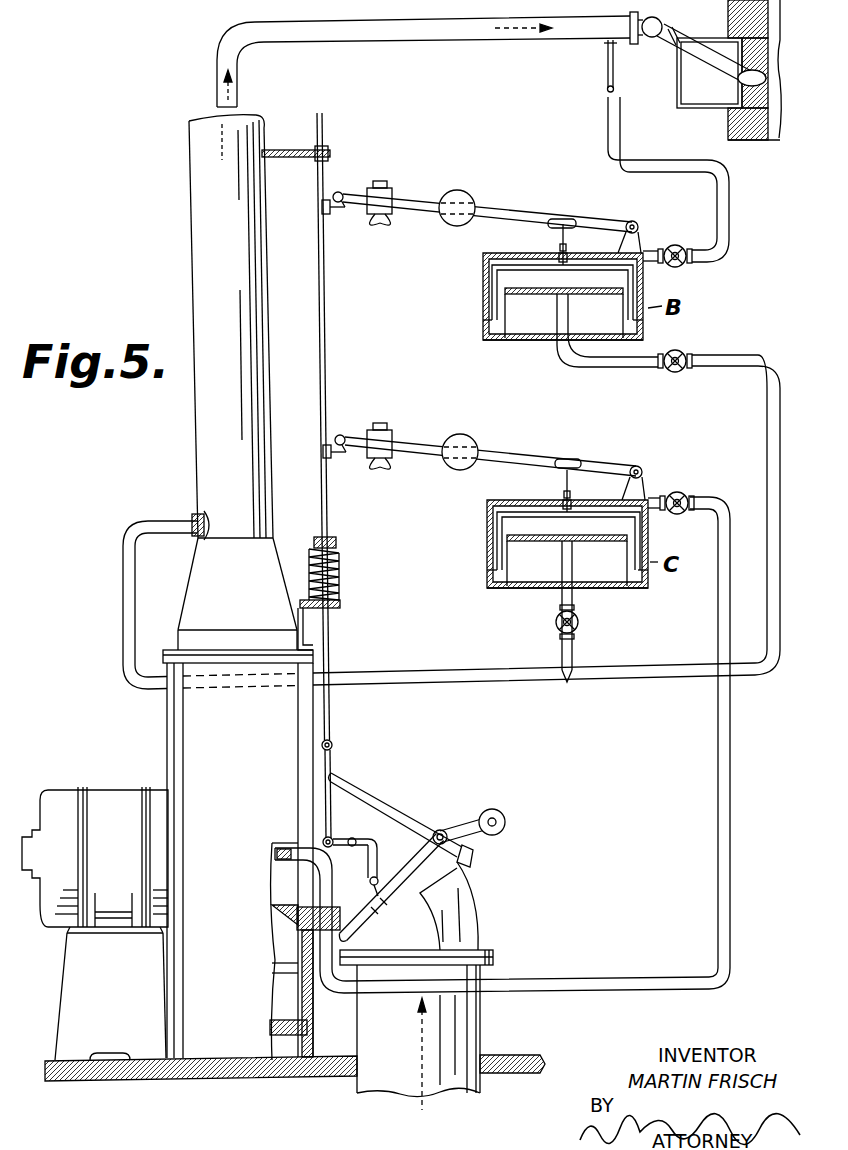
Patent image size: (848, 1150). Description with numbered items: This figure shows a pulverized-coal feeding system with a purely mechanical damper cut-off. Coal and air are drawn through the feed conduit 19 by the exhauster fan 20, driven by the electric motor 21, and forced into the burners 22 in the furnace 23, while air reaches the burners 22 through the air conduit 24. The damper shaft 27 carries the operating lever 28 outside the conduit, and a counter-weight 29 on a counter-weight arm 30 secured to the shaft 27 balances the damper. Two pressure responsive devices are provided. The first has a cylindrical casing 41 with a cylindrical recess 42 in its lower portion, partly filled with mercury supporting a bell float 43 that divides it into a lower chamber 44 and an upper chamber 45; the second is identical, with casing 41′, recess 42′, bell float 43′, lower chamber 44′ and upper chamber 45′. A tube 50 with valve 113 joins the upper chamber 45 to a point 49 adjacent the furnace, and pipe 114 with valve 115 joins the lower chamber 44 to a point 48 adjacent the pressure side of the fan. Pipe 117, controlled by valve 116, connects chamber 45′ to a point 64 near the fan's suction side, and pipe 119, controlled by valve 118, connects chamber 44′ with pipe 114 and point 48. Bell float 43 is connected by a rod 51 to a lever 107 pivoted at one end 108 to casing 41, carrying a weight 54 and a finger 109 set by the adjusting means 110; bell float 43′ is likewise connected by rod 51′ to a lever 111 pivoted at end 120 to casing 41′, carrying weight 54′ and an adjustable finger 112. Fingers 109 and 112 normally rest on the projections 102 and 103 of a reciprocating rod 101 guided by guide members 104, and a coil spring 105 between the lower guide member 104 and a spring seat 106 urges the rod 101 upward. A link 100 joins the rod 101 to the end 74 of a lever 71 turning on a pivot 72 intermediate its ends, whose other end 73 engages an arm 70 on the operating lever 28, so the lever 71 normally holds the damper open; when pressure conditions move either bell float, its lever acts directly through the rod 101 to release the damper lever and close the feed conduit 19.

The feed conduit 19 is at (216, 103).
The exhauster fan 20 is at (274, 976).
The electric motor 21 is at (101, 795).
The burners 22 is at (763, 77).
The furnace 23 is at (771, 136).
The air conduit 24 is at (707, 100).
The shaft 27 is at (440, 829).
The operating lever 28 is at (381, 908).
The counter-weight 29 is at (496, 811).
The counter-weight arm 30 is at (471, 848).
The cylindrical casing 41 is at (645, 325).
The casing 41′ is at (649, 580).
The cylindrical recess 42 is at (606, 330).
The cylindrical recess 42′ is at (609, 578).
The bell float 43 is at (482, 270).
The bell float 43′ is at (487, 516).
The lower chamber 44 is at (532, 286).
The lower chamber 44′ is at (533, 528).
The upper chamber 45 is at (501, 258).
The upper chamber 45′ is at (515, 506).
The point adjacent pressure side of fan 48 is at (208, 523).
The point adjacent furnace 49 is at (607, 45).
The tube 50 is at (607, 99).
The rod 51 is at (569, 238).
The rod 51′ is at (573, 483).
The weight 54 is at (462, 194).
The weight 54′ is at (468, 437).
The point adjacent suction side of fan 64 is at (274, 855).
The arm 70 is at (370, 881).
The lever 71 is at (376, 826).
The pivot 72 is at (352, 838).
The end of lever 73 is at (378, 868).
The end of lever 74 is at (330, 847).
The link 100 is at (333, 757).
The reciprocating rod 101 is at (327, 326).
The projection 102 is at (323, 451).
The projection 103 is at (322, 208).
The guide members 104 is at (326, 155).
The coil spring 105 is at (340, 573).
The spring seat 106 is at (340, 546).
The lever 107 is at (503, 213).
The pivot end 108 is at (635, 222).
The finger 109 is at (360, 186).
The adjusting means 110 is at (374, 218).
The lever 111 is at (517, 455).
The adjustable finger 112 is at (343, 435).
The valve 113 is at (677, 248).
The pipe 114 is at (740, 360).
The valve 115 is at (672, 371).
The valve 116 is at (682, 493).
The pipe 117 is at (716, 612).
The valve 118 is at (580, 622).
The pipe 119 is at (562, 608).
The pivot end 120 is at (643, 469).